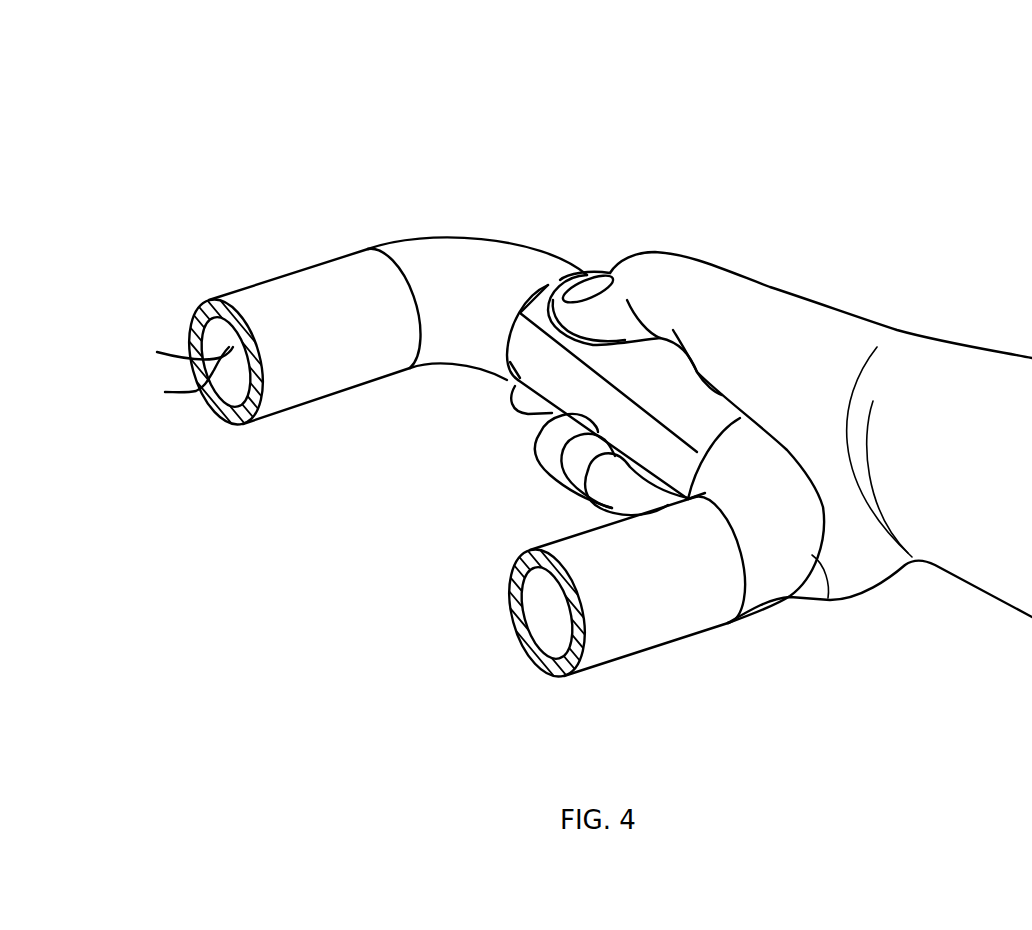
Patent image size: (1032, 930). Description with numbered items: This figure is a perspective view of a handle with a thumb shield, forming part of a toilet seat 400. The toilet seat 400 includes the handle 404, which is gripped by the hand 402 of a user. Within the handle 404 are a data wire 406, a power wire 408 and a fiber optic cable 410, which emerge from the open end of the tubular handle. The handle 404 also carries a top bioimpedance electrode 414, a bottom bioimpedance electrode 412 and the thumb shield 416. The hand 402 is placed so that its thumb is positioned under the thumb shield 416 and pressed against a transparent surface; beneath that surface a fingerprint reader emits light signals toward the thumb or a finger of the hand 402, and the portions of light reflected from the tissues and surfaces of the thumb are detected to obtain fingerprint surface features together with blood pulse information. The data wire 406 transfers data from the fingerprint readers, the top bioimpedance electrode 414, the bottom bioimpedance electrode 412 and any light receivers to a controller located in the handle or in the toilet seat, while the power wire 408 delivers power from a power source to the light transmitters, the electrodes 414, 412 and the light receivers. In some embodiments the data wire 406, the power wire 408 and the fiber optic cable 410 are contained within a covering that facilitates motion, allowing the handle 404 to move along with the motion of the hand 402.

The toilet seat 400 is at (193, 93).
The hand 402 is at (833, 337).
The handle 404 is at (450, 273).
The data wire 406 is at (181, 358).
The power wire 408 is at (183, 393).
The fiber optic cable 410 is at (205, 408).
The bottom bioimpedance electrode 412 is at (518, 380).
The top bioimpedance electrode 414 is at (680, 383).
The thumb shield 416 is at (565, 300).